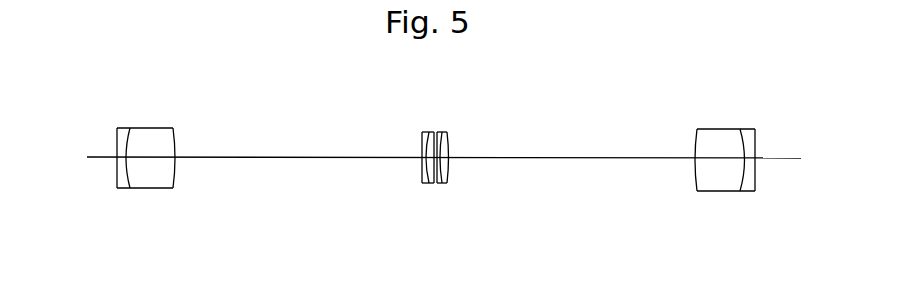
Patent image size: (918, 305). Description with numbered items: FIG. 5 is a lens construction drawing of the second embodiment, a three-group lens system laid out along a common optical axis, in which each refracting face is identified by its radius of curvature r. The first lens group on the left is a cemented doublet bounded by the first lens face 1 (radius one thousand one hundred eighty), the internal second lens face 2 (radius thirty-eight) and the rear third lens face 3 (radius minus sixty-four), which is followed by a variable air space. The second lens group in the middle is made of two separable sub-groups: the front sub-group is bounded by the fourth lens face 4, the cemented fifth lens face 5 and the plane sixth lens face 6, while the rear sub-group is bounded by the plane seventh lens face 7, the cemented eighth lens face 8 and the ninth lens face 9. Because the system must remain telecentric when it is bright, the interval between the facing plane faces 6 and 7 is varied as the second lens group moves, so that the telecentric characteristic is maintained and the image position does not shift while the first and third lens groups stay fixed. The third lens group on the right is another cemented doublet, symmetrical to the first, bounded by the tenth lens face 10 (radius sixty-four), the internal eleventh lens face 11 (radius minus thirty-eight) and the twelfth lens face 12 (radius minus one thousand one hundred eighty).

The first lens face 1 is at (117, 167).
The second lens face 2 is at (122, 188).
The third lens face 3 is at (175, 140).
The fourth lens face 4 is at (421, 163).
The fifth lens face 5 is at (426, 173).
The sixth lens face 6 is at (433, 186).
The seventh lens face 7 is at (444, 142).
The eighth lens face 8 is at (448, 152).
The ninth lens face 9 is at (450, 175).
The tenth lens face 10 is at (695, 173).
The eleventh lens face 11 is at (742, 172).
The twelfth lens face 12 is at (755, 145).